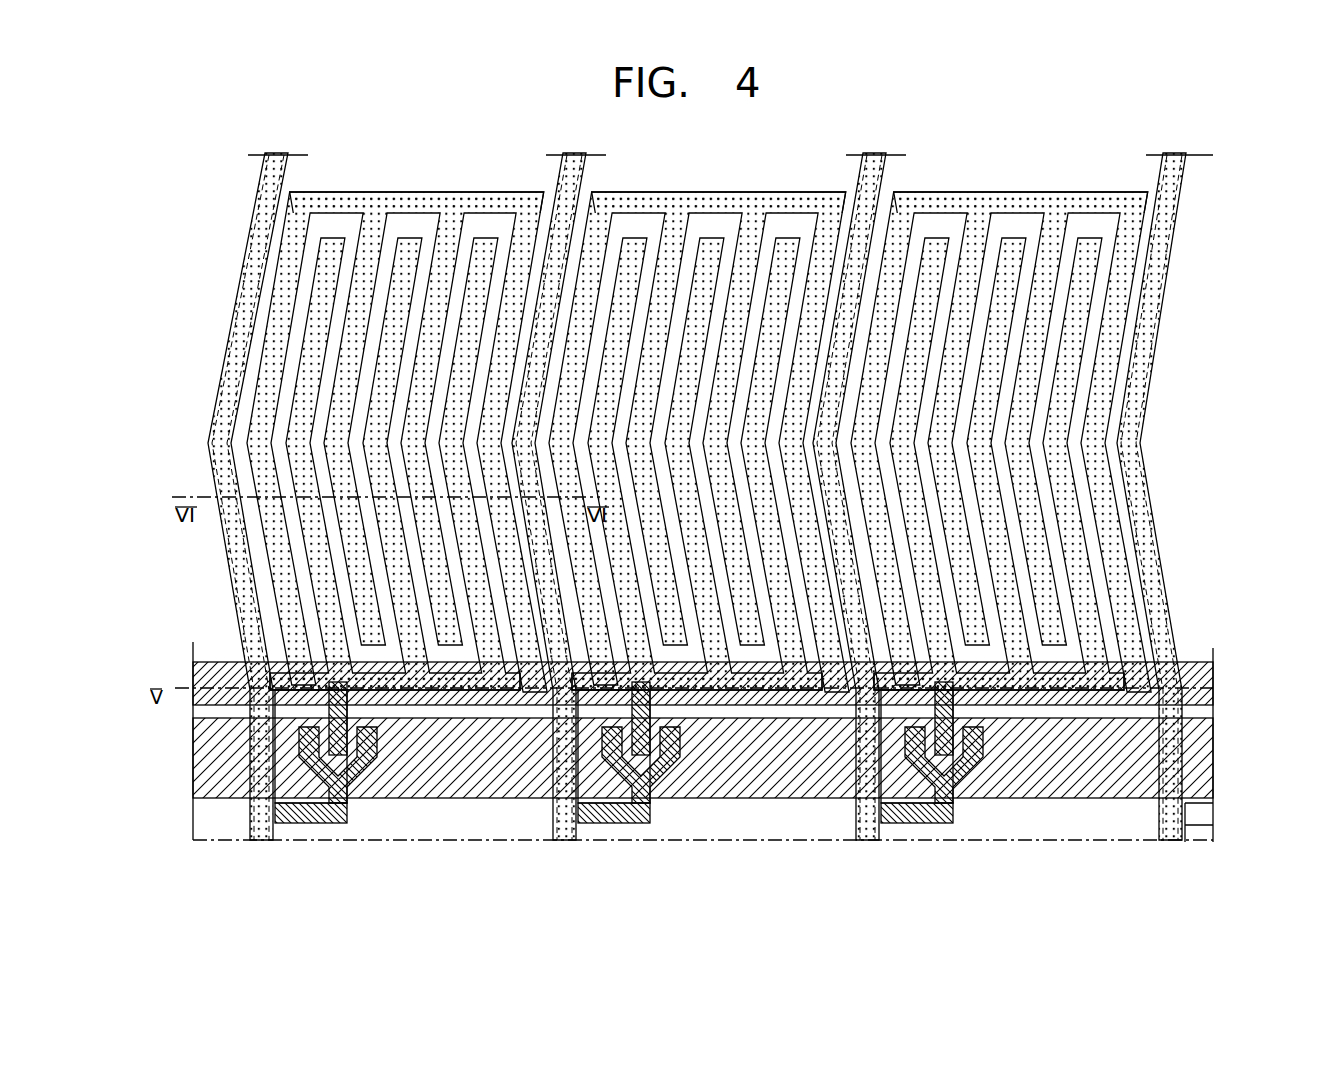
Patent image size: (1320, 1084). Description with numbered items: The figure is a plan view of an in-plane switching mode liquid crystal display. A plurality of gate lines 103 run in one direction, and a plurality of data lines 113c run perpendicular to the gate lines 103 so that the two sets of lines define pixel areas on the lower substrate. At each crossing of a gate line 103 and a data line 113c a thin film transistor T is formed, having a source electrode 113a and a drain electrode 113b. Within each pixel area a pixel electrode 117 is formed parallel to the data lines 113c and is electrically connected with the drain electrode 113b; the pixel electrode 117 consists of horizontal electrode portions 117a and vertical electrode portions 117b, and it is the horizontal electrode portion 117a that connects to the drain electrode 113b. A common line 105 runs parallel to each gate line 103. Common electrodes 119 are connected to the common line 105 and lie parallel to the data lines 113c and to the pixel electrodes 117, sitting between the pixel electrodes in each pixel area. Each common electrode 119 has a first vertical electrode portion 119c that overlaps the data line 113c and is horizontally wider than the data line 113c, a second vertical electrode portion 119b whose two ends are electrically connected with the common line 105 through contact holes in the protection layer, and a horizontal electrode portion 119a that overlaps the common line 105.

The gate line 103 is at (1212, 765).
The common line 105 is at (1213, 700).
The source electrode 113a is at (313, 812).
The drain electrode 113b is at (340, 797).
The data line 113c is at (252, 752).
The thin film transistor T is at (372, 770).
The pixel electrode 117 is at (633, 584).
The horizontal electrode portion 117a is at (447, 682).
The vertical electrode portion 117b is at (307, 355).
The common electrode 119 is at (660, 495).
The horizontal electrode portion 119a is at (335, 200).
The second vertical electrode portion 119b is at (287, 283).
The first vertical electrode portion 119c is at (671, 495).